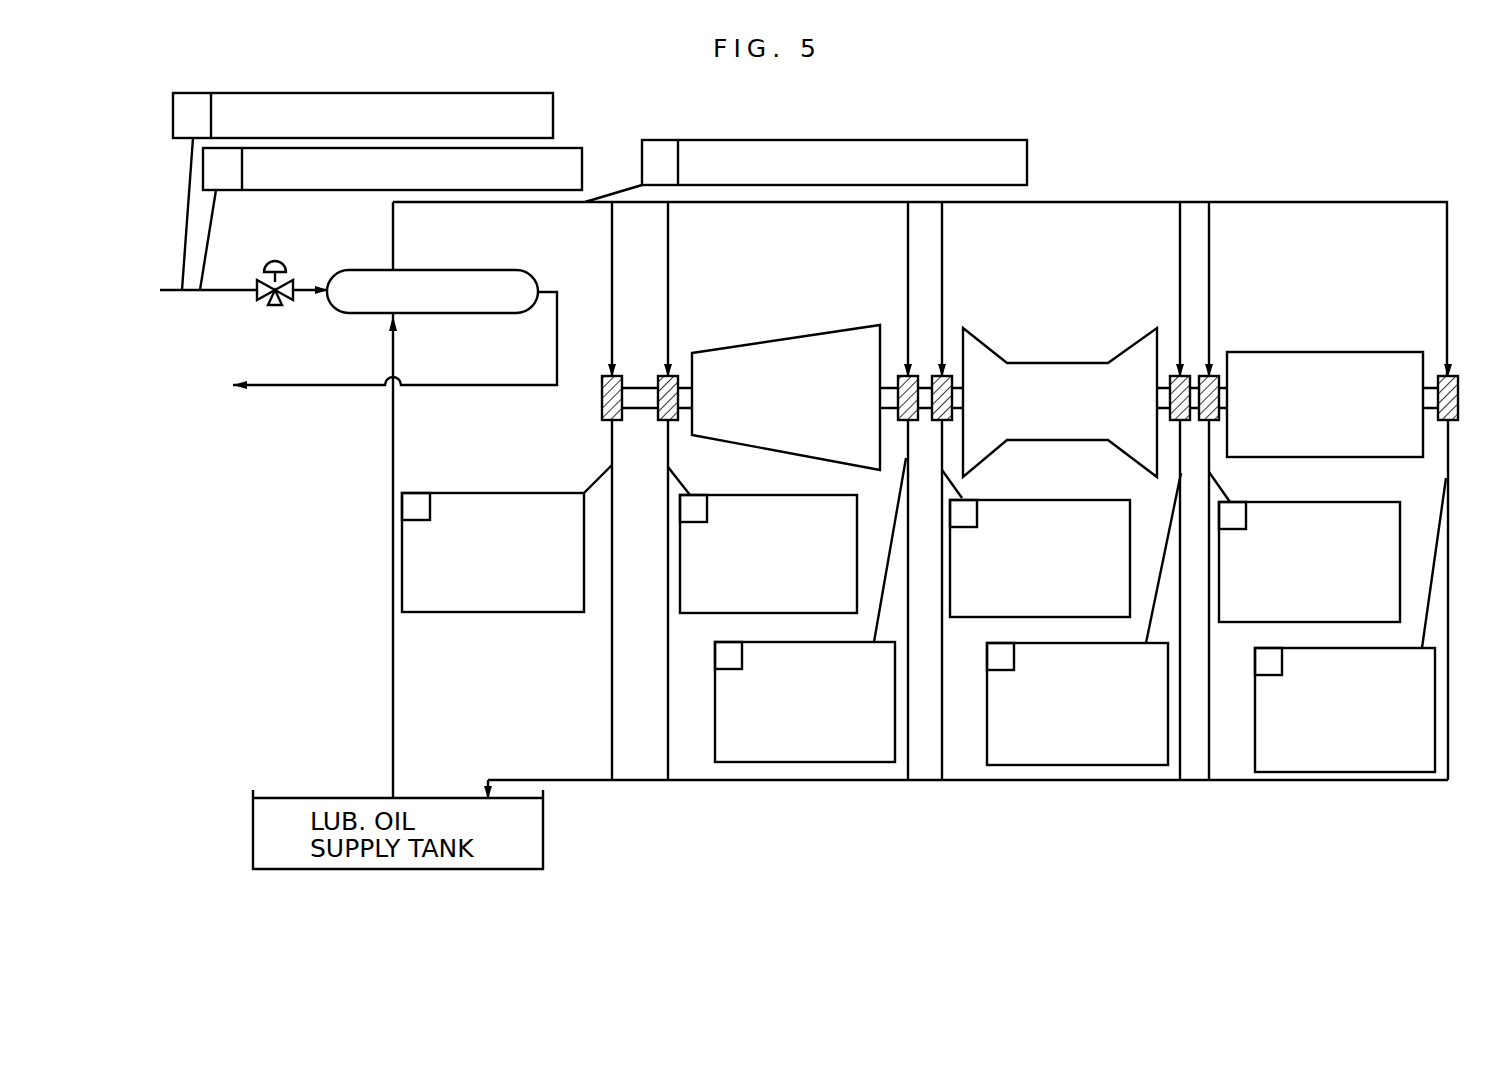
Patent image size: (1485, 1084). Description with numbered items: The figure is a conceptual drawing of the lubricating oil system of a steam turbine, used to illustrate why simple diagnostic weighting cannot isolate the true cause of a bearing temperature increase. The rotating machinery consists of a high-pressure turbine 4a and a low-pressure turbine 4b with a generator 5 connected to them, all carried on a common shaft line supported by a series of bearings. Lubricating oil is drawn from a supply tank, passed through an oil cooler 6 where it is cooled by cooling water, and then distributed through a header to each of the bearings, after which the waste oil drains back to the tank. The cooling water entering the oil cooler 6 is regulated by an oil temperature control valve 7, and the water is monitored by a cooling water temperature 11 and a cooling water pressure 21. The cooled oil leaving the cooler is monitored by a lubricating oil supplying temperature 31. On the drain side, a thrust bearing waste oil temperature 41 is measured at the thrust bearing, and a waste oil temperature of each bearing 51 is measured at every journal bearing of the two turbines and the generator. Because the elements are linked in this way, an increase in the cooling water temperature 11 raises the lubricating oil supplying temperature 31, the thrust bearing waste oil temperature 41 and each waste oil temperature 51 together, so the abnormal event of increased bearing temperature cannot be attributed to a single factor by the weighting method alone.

The cooling water temperature 11 is at (456, 93).
The cooling water pressure 21 is at (582, 148).
The lubricating oil supplying temperature 31 is at (1007, 140).
The oil temperature control valve 7 is at (280, 268).
The oil cooler 6 is at (500, 270).
The high-pressure turbine 4a is at (790, 338).
The low-pressure turbine 4b is at (989, 348).
The generator 5 is at (1305, 352).
The thrust bearing waste oil temperature 41 is at (507, 613).
The waste oil temperature of each bearing 51 is at (752, 495).